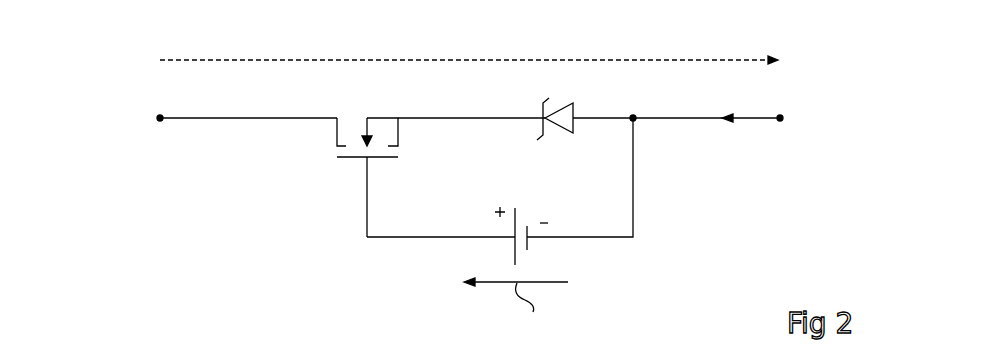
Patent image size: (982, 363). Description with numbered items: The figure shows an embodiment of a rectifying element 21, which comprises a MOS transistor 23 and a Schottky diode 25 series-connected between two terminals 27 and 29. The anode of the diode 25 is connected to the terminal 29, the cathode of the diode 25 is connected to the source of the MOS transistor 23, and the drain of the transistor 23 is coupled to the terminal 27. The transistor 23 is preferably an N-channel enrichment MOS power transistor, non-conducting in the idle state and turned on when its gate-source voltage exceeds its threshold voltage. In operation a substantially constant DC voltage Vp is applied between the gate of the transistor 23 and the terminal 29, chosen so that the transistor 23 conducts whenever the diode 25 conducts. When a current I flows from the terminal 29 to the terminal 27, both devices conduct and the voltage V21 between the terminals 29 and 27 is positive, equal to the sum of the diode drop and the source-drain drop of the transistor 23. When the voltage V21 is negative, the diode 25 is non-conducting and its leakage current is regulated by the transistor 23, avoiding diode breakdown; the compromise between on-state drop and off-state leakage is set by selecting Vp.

The rectifying element 21 is at (350, 276).
The MOS transistor 23 is at (343, 166).
The Schottky diode 25 is at (558, 131).
The terminal 27 is at (158, 116).
The terminal 29 is at (780, 117).
The voltage between terminals V21 is at (667, 60).